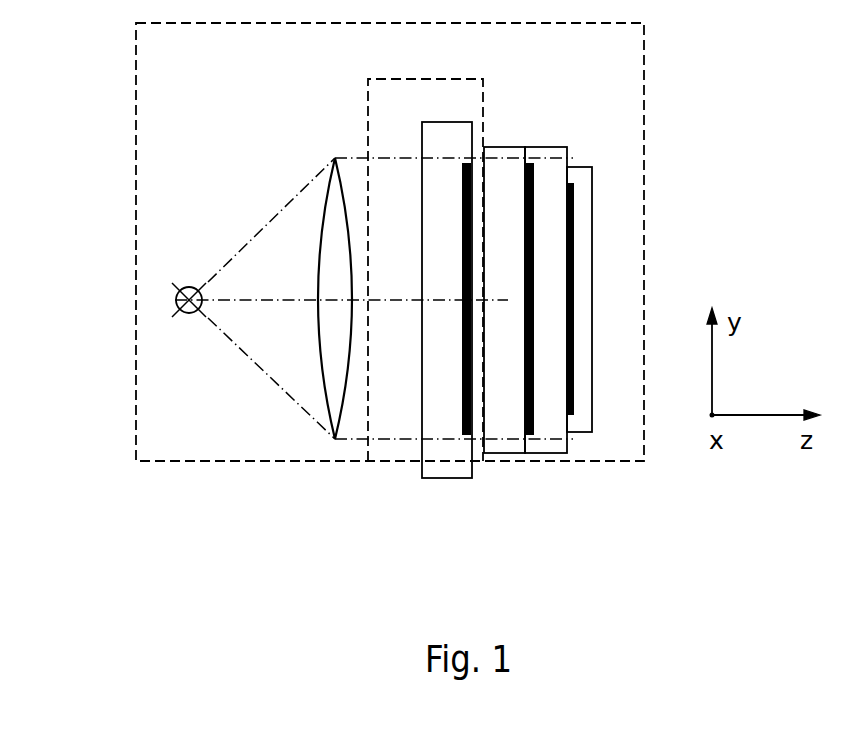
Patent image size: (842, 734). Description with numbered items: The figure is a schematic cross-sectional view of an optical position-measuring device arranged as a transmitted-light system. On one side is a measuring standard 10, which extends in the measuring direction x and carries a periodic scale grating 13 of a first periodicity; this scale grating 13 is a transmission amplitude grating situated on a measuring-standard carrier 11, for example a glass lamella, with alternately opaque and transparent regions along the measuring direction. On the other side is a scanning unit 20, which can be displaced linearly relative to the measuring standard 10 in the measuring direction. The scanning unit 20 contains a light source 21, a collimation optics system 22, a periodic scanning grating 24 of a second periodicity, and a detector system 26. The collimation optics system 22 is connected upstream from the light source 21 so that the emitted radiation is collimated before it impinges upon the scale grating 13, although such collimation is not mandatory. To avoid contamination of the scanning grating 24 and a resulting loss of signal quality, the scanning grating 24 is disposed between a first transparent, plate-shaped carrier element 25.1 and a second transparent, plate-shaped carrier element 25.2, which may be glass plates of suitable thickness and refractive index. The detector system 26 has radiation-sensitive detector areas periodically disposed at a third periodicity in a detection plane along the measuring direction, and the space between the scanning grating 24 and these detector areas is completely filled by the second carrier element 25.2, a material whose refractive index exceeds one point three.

The measuring standard 10 is at (416, 469).
The measuring-standard carrier 11 is at (438, 473).
The scale grating 13 is at (462, 192).
The scanning unit 20 is at (130, 255).
The light source 21 is at (190, 287).
The collimation optics system 22 is at (336, 157).
The scanning grating 24 is at (536, 178).
The first carrier element 25.1 is at (503, 446).
The second carrier element 25.2 is at (557, 446).
The detector system 26 is at (578, 213).